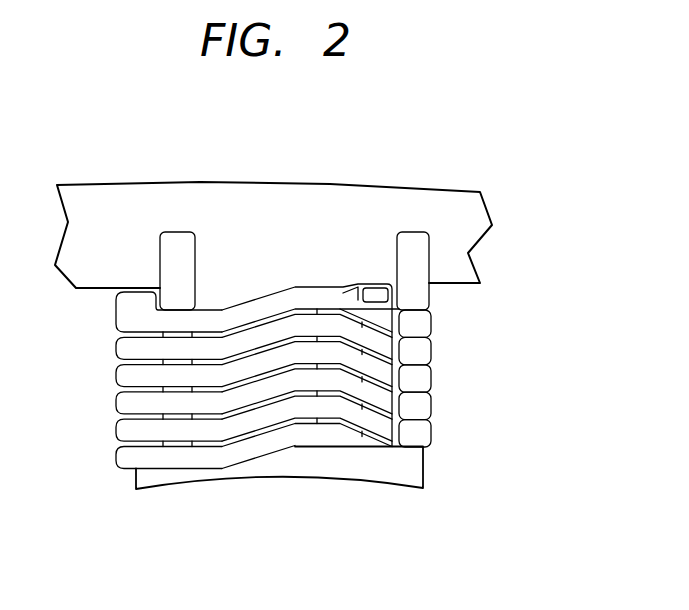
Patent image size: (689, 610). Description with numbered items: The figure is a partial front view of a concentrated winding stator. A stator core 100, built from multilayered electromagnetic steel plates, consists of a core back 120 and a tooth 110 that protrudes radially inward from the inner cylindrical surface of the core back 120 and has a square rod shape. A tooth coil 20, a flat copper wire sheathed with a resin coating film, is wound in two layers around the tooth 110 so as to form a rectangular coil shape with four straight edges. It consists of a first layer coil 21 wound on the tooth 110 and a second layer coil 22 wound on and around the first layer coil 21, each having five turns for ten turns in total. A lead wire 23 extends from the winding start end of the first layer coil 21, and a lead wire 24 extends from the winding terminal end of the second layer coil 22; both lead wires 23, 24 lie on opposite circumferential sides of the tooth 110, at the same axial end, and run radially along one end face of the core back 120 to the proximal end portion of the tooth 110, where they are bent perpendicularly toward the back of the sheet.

The stator core 100 is at (102, 174).
The core back 120 is at (458, 212).
The tooth 110 is at (390, 470).
The tooth coil 20 is at (417, 378).
The first layer coil 21 is at (175, 447).
The second layer coil 22 is at (132, 430).
The lead wire 23 is at (178, 243).
The lead wire 24 is at (408, 243).